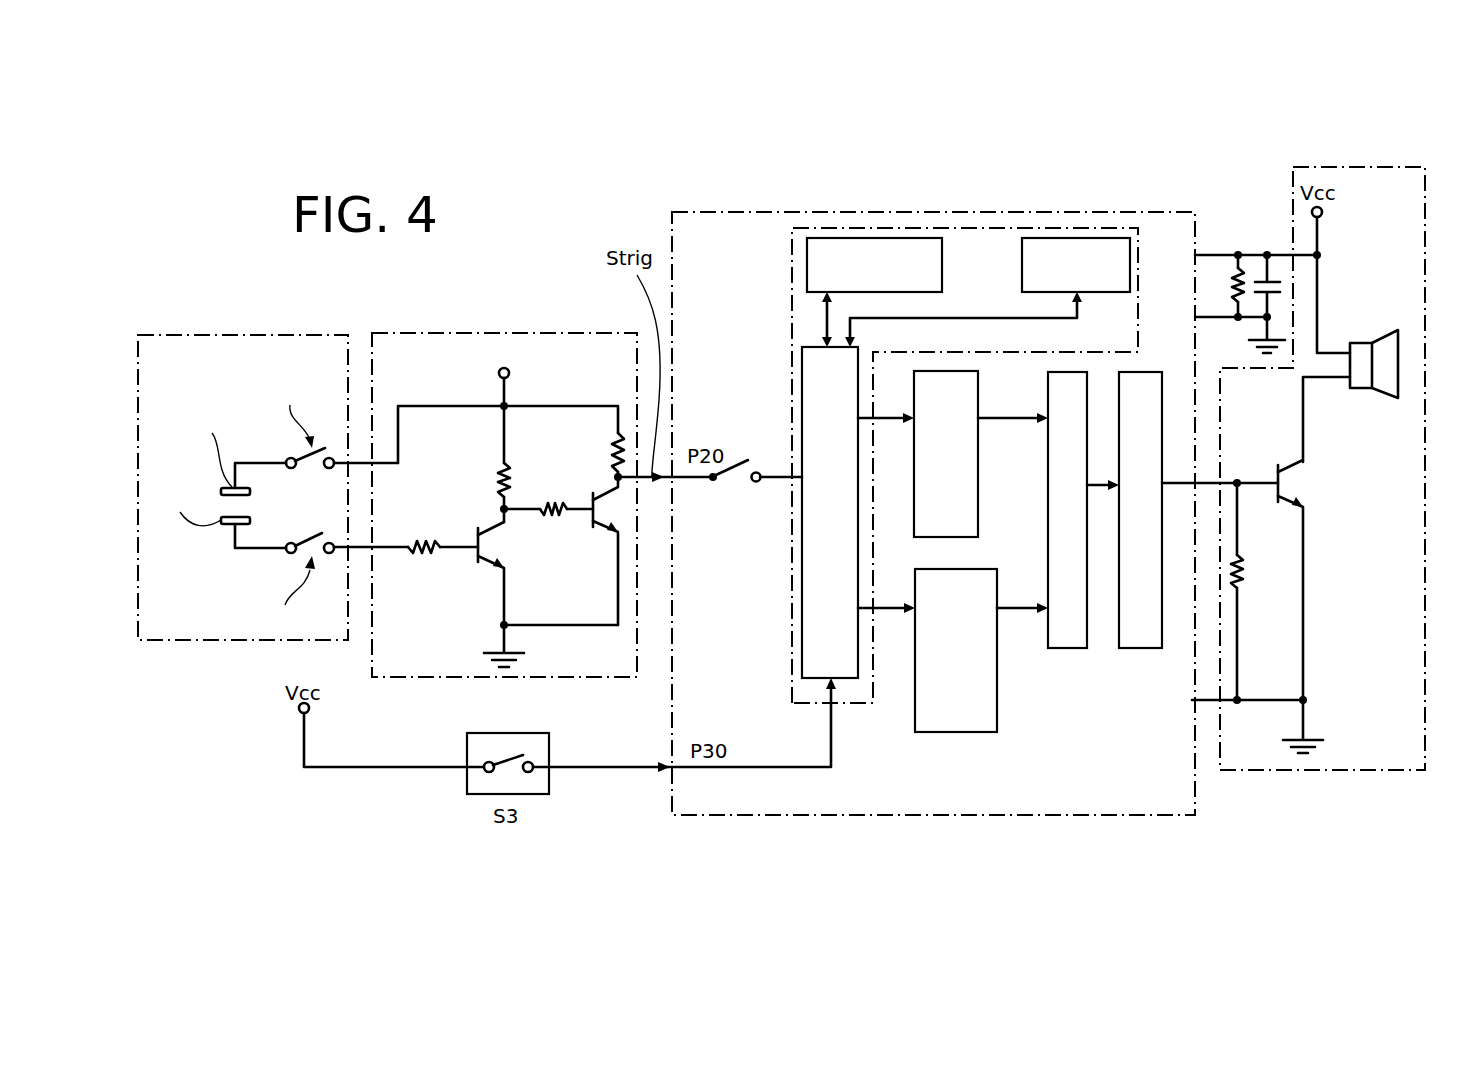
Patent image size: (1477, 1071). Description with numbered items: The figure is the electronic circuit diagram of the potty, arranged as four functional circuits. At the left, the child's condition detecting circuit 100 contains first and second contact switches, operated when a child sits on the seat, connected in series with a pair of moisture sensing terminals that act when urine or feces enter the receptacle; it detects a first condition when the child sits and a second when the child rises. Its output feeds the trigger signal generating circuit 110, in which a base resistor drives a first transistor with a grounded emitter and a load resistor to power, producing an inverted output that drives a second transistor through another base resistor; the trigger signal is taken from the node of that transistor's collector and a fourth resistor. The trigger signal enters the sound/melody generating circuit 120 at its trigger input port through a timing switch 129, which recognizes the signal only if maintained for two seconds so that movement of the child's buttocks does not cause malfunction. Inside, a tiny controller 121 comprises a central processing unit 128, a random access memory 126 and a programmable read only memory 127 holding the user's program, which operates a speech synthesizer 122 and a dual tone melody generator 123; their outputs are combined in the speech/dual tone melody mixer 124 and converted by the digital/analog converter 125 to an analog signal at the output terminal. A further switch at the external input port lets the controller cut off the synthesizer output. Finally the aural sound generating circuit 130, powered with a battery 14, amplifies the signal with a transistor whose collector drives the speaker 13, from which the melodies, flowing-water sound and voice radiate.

The child's condition detecting circuit 100 is at (162, 641).
The trigger signal generating circuit 110 is at (518, 333).
The sound/melody generating circuit 120 is at (1017, 212).
The tiny controller 121 is at (792, 295).
The speech synthesizer 122 is at (978, 487).
The dual tone melody generator 123 is at (945, 732).
The speech/dual tone melody mixer 124 is at (1057, 648).
The digital/analog converter 125 is at (1130, 648).
The random access memory 126 is at (887, 238).
The programmable read only memory 127 is at (1105, 238).
The central processing unit 128 is at (800, 610).
The timing switch 129 is at (732, 485).
The speaker 13 is at (1398, 347).
The battery 14 is at (1281, 268).
The aural sound generating circuit 130 is at (1348, 468).